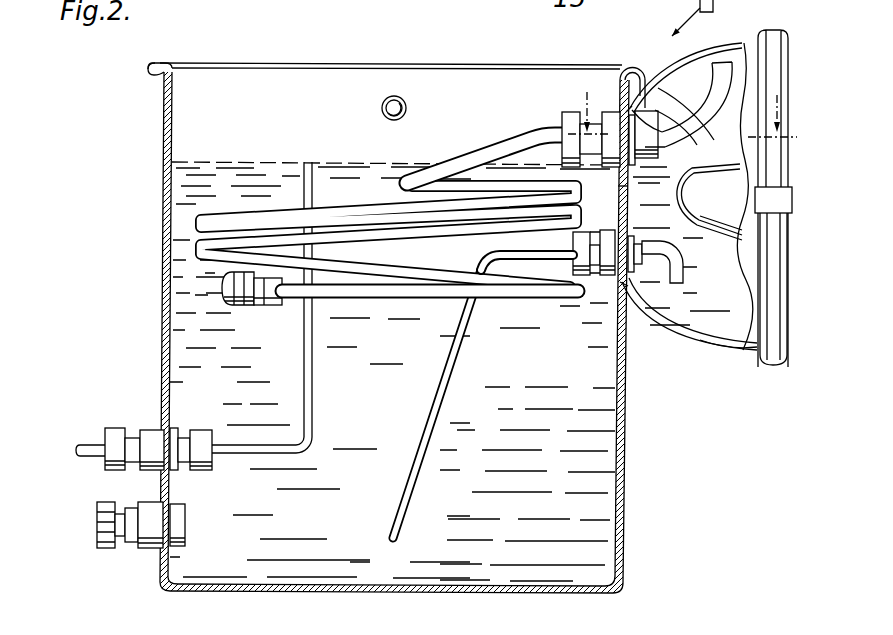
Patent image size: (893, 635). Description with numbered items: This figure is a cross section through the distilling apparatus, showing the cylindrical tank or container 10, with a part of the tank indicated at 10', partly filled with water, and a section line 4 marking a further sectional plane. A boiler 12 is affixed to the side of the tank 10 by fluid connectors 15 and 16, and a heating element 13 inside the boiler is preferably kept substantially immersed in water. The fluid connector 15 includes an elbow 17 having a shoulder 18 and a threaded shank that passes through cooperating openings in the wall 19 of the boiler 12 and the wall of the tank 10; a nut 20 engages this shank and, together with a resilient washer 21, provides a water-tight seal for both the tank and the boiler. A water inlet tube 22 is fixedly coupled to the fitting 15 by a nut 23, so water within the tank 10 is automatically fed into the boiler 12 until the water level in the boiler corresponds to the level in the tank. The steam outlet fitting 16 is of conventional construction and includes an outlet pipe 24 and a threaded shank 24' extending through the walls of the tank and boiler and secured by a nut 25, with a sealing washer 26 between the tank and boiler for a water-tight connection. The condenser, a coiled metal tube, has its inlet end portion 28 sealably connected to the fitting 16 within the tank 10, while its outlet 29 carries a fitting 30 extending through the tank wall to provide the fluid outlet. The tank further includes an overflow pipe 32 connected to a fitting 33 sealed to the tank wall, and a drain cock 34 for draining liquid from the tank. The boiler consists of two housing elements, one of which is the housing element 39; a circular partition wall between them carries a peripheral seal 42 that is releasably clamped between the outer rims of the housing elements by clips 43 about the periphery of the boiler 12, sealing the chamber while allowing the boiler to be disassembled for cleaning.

The tank 10 is at (419, 328).
The rolled rim of tank 10' is at (140, 95).
The section line 4- 4 is at (682, 100).
The boiler 12 is at (697, 341).
The heating element 13 is at (724, 201).
The fluid connector 15 is at (613, 296).
The steam outlet fitting 16 is at (667, 105).
The elbow 17 is at (673, 284).
The shoulder 18 is at (640, 240).
The wall of the boiler 19 is at (640, 184).
The nut 20 is at (607, 285).
The resilient washer 21 is at (628, 289).
The water inlet tube 22 is at (436, 397).
The nut 23 is at (582, 293).
The outlet pipe 24 is at (699, 123).
The threaded shank 24' is at (689, 63).
The nut 25 is at (673, 64).
The sealing washer 26 is at (652, 68).
The inlet end portion 28 is at (513, 133).
The outlet 29 is at (292, 312).
The fitting 30 is at (248, 313).
The overflow pipe 32 is at (310, 350).
The fitting 33 is at (181, 432).
The drain cock 34 is at (182, 507).
The housing element 39 is at (728, 350).
The peripheral seal 42 is at (770, 277).
The clip 43 is at (770, 220).